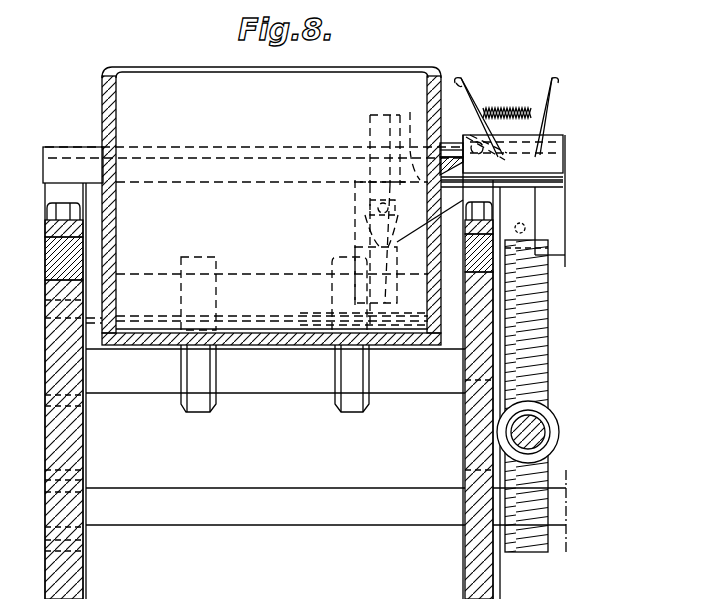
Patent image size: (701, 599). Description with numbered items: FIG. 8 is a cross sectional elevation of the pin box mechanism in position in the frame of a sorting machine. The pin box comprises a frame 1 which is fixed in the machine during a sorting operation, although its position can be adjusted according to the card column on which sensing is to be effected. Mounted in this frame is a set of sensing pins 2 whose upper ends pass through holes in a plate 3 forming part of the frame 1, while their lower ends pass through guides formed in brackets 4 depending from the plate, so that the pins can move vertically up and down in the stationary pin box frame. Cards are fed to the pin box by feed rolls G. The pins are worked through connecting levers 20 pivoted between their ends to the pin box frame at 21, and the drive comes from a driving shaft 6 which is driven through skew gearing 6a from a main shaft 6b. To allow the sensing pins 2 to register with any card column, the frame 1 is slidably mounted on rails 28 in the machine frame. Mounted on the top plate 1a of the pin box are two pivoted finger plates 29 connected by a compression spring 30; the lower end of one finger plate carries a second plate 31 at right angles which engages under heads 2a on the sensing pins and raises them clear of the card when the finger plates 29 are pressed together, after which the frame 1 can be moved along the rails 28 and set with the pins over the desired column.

The frame 1 is at (545, 135).
The top plate 1a is at (543, 180).
The sensing pins 2 is at (375, 243).
The heads 2a is at (392, 138).
The plate 3 is at (358, 181).
The brackets 4 is at (355, 268).
The driving shaft 6 is at (283, 492).
The skew gearing 6a is at (550, 472).
The main shaft 6b is at (556, 422).
The connecting levers 20 is at (548, 232).
The pivot 21 is at (525, 225).
The rails 28 is at (455, 143).
The finger plates 29 is at (552, 79).
The compression spring 30 is at (508, 108).
The second plate 31 is at (410, 112).
The feed rolls G is at (205, 412).